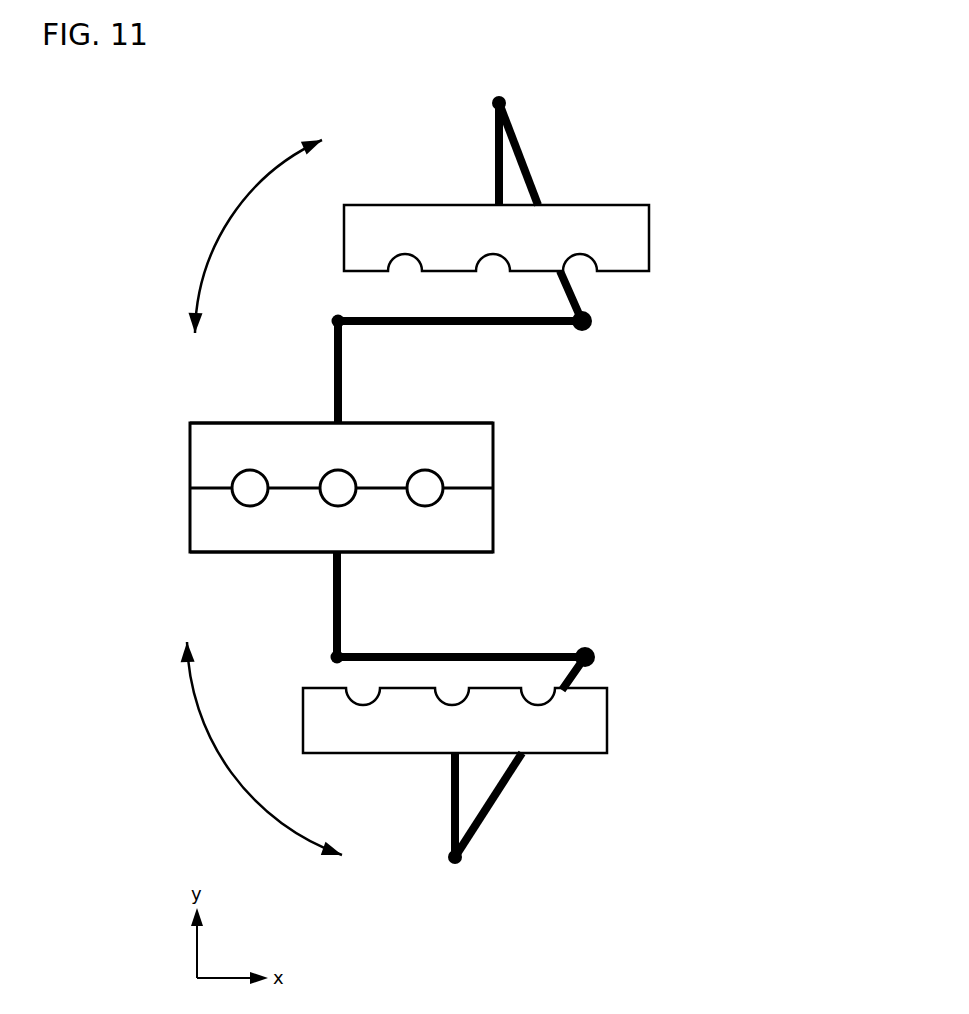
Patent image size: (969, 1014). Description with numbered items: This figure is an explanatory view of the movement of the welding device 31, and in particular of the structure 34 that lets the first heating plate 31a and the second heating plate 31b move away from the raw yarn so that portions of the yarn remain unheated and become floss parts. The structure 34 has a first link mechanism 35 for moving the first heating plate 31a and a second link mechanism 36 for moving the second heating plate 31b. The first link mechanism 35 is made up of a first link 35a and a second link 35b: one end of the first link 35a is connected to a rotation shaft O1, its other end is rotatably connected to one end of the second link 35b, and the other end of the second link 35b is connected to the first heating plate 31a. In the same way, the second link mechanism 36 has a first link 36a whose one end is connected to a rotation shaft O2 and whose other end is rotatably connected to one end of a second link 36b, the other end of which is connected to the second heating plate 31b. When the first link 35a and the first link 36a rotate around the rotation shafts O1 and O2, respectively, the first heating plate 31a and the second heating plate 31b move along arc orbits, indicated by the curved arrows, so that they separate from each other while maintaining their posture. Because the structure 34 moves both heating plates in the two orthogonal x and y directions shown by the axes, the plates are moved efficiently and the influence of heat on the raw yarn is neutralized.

The welding device 31 is at (384, 487).
The first heating plate 31a is at (443, 423).
The second heating plate 31b is at (440, 552).
The structure 34 is at (702, 265).
The first link mechanism 35 is at (490, 259).
The first link 35a is at (522, 152).
The second link 35b is at (493, 158).
The second link mechanism 36 is at (487, 708).
The first link 36a is at (513, 650).
The second link 36b is at (333, 595).
The rotation shaft O1 is at (594, 333).
The rotation shaft O2 is at (590, 643).